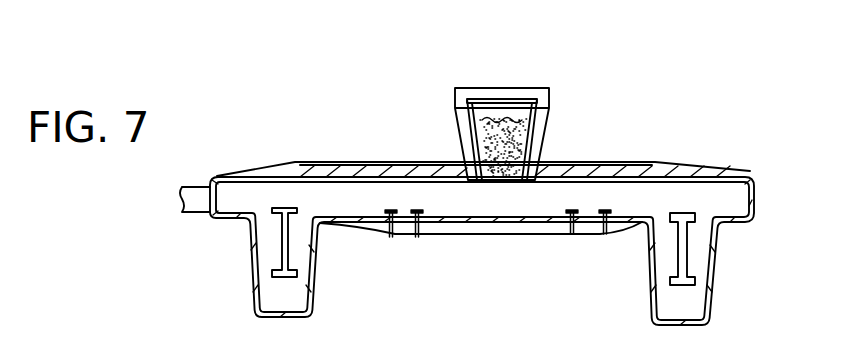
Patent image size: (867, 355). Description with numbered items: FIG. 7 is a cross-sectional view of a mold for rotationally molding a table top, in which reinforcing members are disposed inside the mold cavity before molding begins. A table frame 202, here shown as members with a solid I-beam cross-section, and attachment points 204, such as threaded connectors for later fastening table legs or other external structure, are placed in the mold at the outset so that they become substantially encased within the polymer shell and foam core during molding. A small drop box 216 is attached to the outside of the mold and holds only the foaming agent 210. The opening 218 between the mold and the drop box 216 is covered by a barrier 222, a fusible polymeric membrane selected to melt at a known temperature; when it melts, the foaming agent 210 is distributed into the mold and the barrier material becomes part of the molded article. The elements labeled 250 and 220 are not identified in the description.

The sample collection device 250 is at (288, 148).
The table frame 202 is at (286, 244).
The attachment points 204 is at (391, 238).
The foaming agent 210 is at (492, 145).
The drop box 216 is at (487, 103).
The opening 218 is at (512, 160).
The upper plate 220 is at (380, 166).
The barrier 222 is at (497, 181).